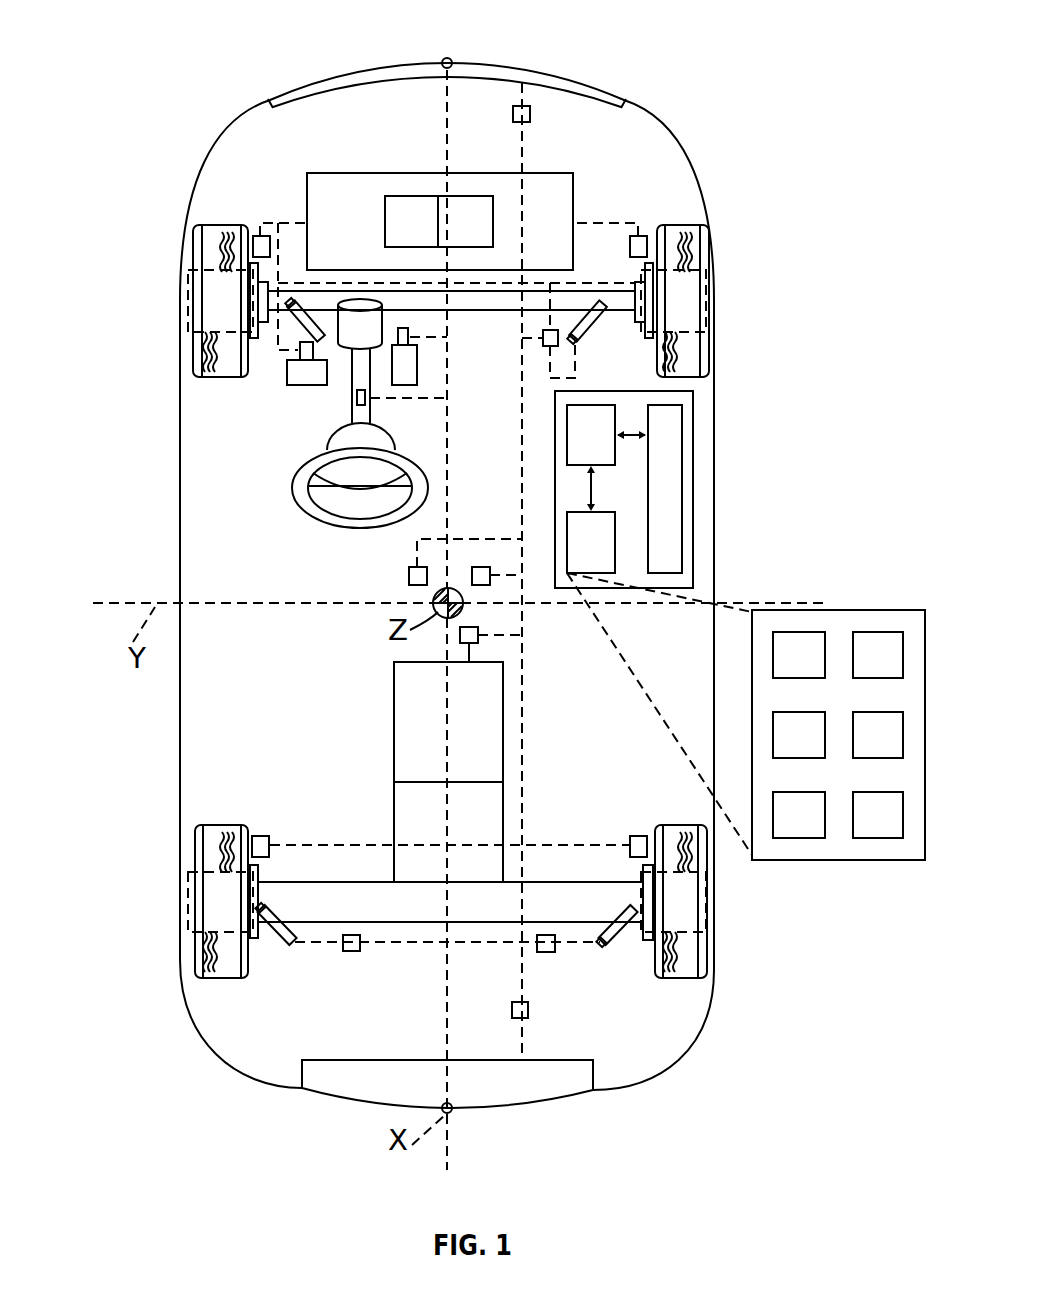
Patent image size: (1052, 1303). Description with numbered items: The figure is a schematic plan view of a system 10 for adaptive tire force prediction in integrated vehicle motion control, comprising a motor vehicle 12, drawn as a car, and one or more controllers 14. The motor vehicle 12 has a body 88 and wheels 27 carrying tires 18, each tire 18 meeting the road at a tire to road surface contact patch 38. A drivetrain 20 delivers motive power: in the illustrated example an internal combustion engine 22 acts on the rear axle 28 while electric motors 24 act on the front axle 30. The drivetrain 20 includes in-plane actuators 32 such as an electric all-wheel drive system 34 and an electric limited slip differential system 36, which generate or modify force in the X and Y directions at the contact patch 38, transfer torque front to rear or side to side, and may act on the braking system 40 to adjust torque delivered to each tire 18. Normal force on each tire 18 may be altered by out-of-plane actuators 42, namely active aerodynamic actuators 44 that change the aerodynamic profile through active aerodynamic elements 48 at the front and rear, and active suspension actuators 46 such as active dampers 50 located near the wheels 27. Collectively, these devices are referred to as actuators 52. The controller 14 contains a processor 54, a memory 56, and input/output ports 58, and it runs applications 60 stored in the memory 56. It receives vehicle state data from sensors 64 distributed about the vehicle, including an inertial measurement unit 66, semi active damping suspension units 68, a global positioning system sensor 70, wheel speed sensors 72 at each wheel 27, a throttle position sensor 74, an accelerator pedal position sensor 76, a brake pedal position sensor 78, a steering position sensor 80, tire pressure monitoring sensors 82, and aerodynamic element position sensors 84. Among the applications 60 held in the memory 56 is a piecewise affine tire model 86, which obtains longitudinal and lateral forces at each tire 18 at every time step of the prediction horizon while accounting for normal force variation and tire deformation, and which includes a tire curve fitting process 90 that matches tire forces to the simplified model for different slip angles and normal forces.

The system 10 is at (174, 30).
The motor vehicle 12 is at (440, 585).
The controller 14 is at (701, 625).
The tire 18 is at (452, 601).
The drivetrain 20 is at (453, 156).
The internal combustion engine 22 is at (406, 718).
The electric motor 24 is at (575, 193).
The wheel 27 is at (452, 601).
The rear axle 28 is at (574, 907).
The front axle 30 is at (316, 305).
The in-plane actuator 32 is at (454, 502).
The electric all-wheel drive system 34 is at (454, 502).
The electric limited slip differential system 36 is at (423, 195).
The tire to road surface contact patch 38 is at (452, 601).
The braking system 40 is at (258, 298).
The out-of-plane actuator 42 is at (452, 581).
The active aerodynamic actuator 44 is at (449, 581).
The active suspension actuator 46 is at (452, 672).
The active aerodynamic element 48 is at (377, 38).
The active damper 50 is at (302, 328).
The actuator 52 is at (452, 581).
The processor 54 is at (567, 440).
The memory 56 is at (701, 674).
The input/output port 58 is at (683, 492).
The application 60 is at (840, 693).
The sensor 64 is at (451, 558).
The inertial measurement unit 66 is at (409, 577).
The semi active damping suspension unit 68 is at (552, 330).
The global positioning system sensor 70 is at (481, 586).
The wheel speed sensor 72 is at (260, 235).
The throttle position sensor 74 is at (502, 531).
The accelerator pedal position sensor 76 is at (417, 373).
The brake pedal position sensor 78 is at (304, 386).
The steering position sensor 80 is at (357, 398).
The tire pressure monitoring sensor 82 is at (745, 932).
The aerodynamic element position sensor 84 is at (526, 106).
The piecewise affine tire model 86 is at (813, 673).
The body 88 is at (180, 532).
The tire curve fitting process 90 is at (878, 735).